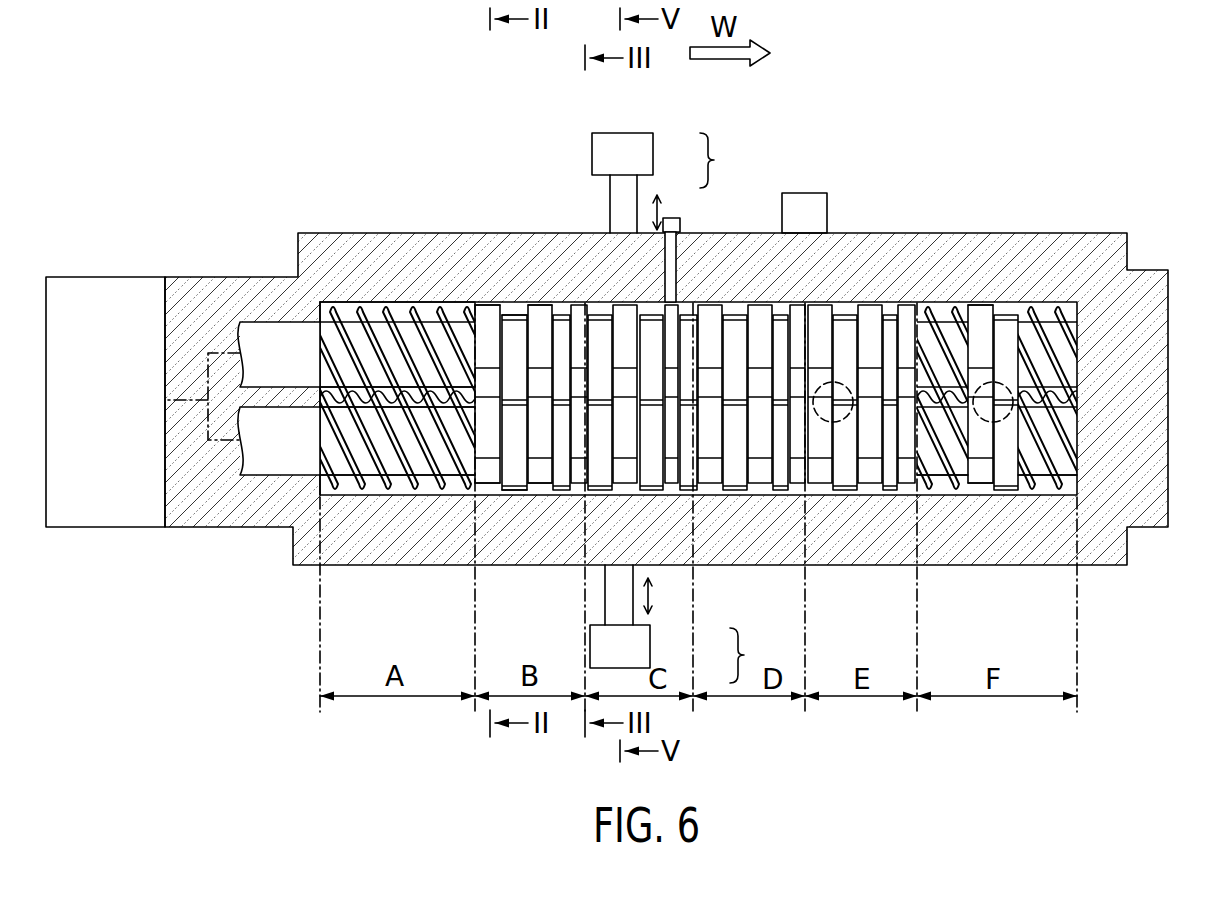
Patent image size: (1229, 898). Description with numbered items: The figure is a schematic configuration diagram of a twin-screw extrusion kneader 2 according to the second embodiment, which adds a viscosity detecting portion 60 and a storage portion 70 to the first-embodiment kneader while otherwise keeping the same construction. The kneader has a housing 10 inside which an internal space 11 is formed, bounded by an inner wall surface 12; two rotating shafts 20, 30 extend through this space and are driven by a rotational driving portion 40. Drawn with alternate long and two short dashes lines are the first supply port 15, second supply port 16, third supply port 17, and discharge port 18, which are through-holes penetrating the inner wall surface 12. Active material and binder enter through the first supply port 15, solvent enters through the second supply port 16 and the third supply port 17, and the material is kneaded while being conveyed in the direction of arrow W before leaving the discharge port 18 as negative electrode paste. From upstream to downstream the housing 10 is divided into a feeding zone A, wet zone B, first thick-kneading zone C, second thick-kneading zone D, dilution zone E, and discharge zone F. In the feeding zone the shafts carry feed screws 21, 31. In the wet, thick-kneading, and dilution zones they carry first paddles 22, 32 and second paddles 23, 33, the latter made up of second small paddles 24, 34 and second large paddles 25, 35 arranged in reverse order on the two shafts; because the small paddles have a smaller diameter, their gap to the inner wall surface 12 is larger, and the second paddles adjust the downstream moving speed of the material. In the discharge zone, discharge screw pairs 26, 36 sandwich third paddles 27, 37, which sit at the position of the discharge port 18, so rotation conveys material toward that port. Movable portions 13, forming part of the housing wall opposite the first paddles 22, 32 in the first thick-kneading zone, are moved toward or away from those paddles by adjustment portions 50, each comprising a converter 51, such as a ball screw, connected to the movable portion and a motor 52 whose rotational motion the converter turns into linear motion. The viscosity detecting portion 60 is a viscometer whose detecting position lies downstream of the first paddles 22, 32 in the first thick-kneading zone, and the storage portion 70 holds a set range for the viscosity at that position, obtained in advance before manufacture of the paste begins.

The twin-screw extrusion kneader 2 is at (1020, 132).
The housing 10 is at (348, 258).
The internal space 11 is at (340, 318).
The inner wall surface 12 is at (440, 295).
The movable portion 13 is at (598, 252).
The first supply port 15 is at (320, 490).
The second supply port 16 is at (435, 490).
The third supply port 17 is at (840, 422).
The discharge port 18 is at (1013, 402).
The rotating shaft 20 is at (258, 330).
The feed screw 21 is at (378, 330).
The first paddle 22 is at (490, 330).
The second paddle 23 is at (566, 183).
The second small paddle 24 is at (510, 330).
The second large paddle 25 is at (545, 330).
The discharge screw pair 26 is at (1047, 327).
The third paddle 27 is at (1040, 327).
The rotating shaft 30 is at (273, 463).
The feed screw 31 is at (388, 486).
The first paddle 32 is at (500, 490).
The second paddle 33 is at (560, 608).
The second small paddle 34 is at (545, 490).
The second large paddle 35 is at (525, 490).
The discharge screw pair 36 is at (1032, 487).
The third paddle 37 is at (1040, 467).
The rotational driving portion 40 is at (118, 290).
The adjustment portion 50 is at (731, 408).
The converter 51 is at (637, 190).
The motor 52 is at (635, 152).
The viscosity detecting portion 60 is at (660, 228).
The storage portion 70 is at (827, 205).